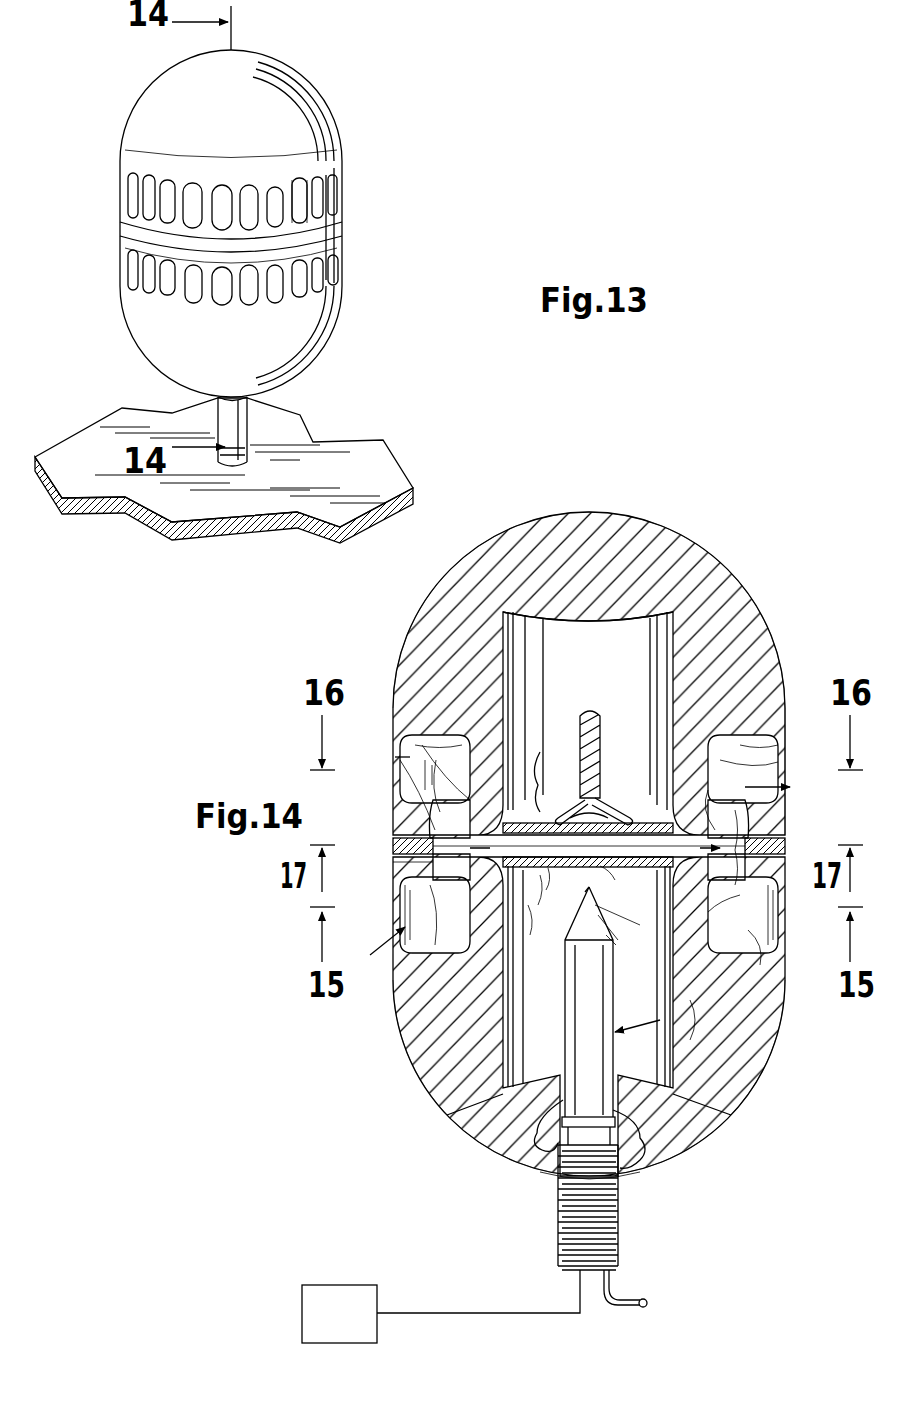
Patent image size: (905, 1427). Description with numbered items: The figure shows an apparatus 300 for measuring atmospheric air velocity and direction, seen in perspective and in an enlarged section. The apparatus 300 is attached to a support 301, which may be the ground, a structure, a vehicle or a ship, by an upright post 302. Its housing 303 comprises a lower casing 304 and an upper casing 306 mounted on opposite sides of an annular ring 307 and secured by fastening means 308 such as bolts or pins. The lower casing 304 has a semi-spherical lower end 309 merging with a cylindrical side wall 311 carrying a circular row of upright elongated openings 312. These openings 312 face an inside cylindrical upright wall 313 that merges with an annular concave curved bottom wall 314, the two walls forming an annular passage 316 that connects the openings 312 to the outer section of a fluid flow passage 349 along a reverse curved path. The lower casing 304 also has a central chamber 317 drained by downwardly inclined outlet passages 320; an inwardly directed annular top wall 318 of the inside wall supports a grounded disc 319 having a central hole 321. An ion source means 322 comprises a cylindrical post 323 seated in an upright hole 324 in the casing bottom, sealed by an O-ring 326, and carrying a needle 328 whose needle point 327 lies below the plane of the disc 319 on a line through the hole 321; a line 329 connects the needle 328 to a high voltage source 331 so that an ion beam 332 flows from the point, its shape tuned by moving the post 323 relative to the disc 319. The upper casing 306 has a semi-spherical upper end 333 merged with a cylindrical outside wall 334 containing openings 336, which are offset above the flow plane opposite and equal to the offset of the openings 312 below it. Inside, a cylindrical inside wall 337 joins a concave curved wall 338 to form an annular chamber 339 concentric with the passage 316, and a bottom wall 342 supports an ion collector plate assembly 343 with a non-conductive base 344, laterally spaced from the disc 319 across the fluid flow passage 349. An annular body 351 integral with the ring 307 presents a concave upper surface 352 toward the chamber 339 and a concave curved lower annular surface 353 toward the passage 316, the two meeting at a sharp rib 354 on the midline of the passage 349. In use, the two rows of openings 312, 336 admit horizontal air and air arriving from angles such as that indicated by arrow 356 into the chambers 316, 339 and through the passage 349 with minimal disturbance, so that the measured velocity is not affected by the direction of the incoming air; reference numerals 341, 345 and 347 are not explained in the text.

In FIG. 13, the apparatus 300 is at (356, 85).
In FIG. 14, the apparatus 300 is at (704, 518).
In FIG. 13, the support 301 is at (380, 458).
In FIG. 13, the upright post 302 is at (247, 430).
In FIG. 14, the upright post 302 is at (558, 1230).
In FIG. 13, the housing 303 is at (122, 126).
In FIG. 14, the housing 303 is at (398, 640).
In FIG. 14, the lower casing 304 is at (398, 1050).
In FIG. 14, the upper casing 306 is at (735, 588).
In FIG. 13, the annular ring 307 is at (330, 240).
In FIG. 14, the annular ring 307 is at (786, 846).
In FIG. 14, the fastening means 308 is at (396, 824).
In FIG. 13, the semi-spherical lower end 309 is at (155, 372).
In FIG. 14, the semi-spherical lower end 309 is at (735, 1110).
In FIG. 13, the cylindrical side wall 311 is at (332, 248).
In FIG. 14, the cylindrical side wall 311 is at (395, 866).
In FIG. 13, the openings 312 is at (318, 284).
In FIG. 14, the openings 312 is at (404, 908).
In FIG. 14, the inside cylindrical upright wall 313 is at (720, 915).
In FIG. 14, the annular concave curved bottom wall 314 is at (770, 940).
In FIG. 14, the annular passage 316 is at (454, 915).
In FIG. 14, the central chamber 317 is at (589, 976).
In FIG. 14, the annular top wall 318 is at (596, 900).
In FIG. 14, the disc 319 is at (574, 890).
In FIG. 14, the outlet passages 320 is at (452, 1116).
In FIG. 14, the central hole 321 is at (596, 870).
In FIG. 14, the ion source means 322 is at (655, 1020).
In FIG. 14, the post 323 is at (592, 1000).
In FIG. 14, the upright hole 324 is at (545, 1170).
In FIG. 14, the O-ring 326 is at (650, 1165).
In FIG. 14, the needle point 327 is at (606, 925).
In FIG. 14, the needle 328 is at (612, 942).
In FIG. 14, the line 329 is at (448, 1313).
In FIG. 14, the high voltage source 331 is at (350, 1285).
In FIG. 14, the ion beam 332 is at (560, 870).
In FIG. 13, the semi-spherical upper end 333 is at (266, 63).
In FIG. 14, the semi-spherical upper end 333 is at (640, 520).
In FIG. 13, the cylindrical outside wall 334 is at (125, 218).
In FIG. 13, the openings 336 is at (300, 200).
In FIG. 14, the openings 336 is at (410, 757).
In FIG. 14, the cylindrical inside wall 337 is at (712, 788).
In FIG. 14, the concave curved wall 338 is at (752, 755).
In FIG. 14, the annular chamber 339 is at (730, 765).
In FIG. 14, the upper cavity 341 is at (587, 711).
In FIG. 14, the bottom wall 342 is at (640, 812).
In FIG. 14, the ion collector plate assembly 343 is at (570, 812).
In FIG. 14, the base 344 is at (542, 752).
In FIG. 14, the right strut 345 is at (606, 812).
In FIG. 14, the coiled electrode lead 347 is at (596, 740).
In FIG. 14, the fluid flow passage 349 is at (566, 915).
In FIG. 14, the annular body 351 is at (785, 820).
In FIG. 14, the concave upper surface 352 is at (402, 796).
In FIG. 14, the concave curved lower annular surface 353 is at (600, 912).
In FIG. 14, the rib 354 is at (453, 786).
In FIG. 14, the arrow 356 is at (302, 1000).